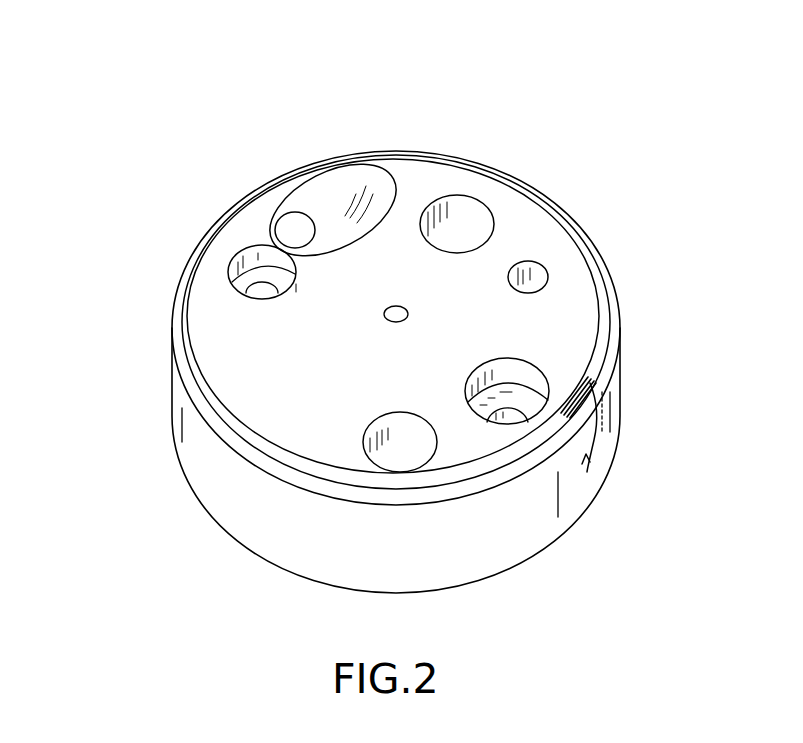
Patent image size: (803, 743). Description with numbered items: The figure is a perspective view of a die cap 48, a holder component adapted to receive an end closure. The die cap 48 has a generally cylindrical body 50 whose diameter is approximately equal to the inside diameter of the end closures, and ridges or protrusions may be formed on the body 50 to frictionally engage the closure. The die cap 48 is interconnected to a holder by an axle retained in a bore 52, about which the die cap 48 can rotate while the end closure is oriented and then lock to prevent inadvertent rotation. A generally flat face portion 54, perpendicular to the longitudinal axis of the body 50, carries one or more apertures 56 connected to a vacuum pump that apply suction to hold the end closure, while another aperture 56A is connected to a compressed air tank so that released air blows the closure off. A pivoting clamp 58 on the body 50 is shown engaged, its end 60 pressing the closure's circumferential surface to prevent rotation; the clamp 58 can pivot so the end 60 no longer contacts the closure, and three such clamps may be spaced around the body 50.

The die cap 48 is at (163, 105).
The body 50 is at (208, 472).
The bore 52 is at (385, 311).
The face portion 54 is at (203, 328).
The apertures 56 is at (255, 268).
The aperture 56A is at (462, 227).
The pivoting clamp 58 is at (593, 435).
The end 60 is at (590, 383).